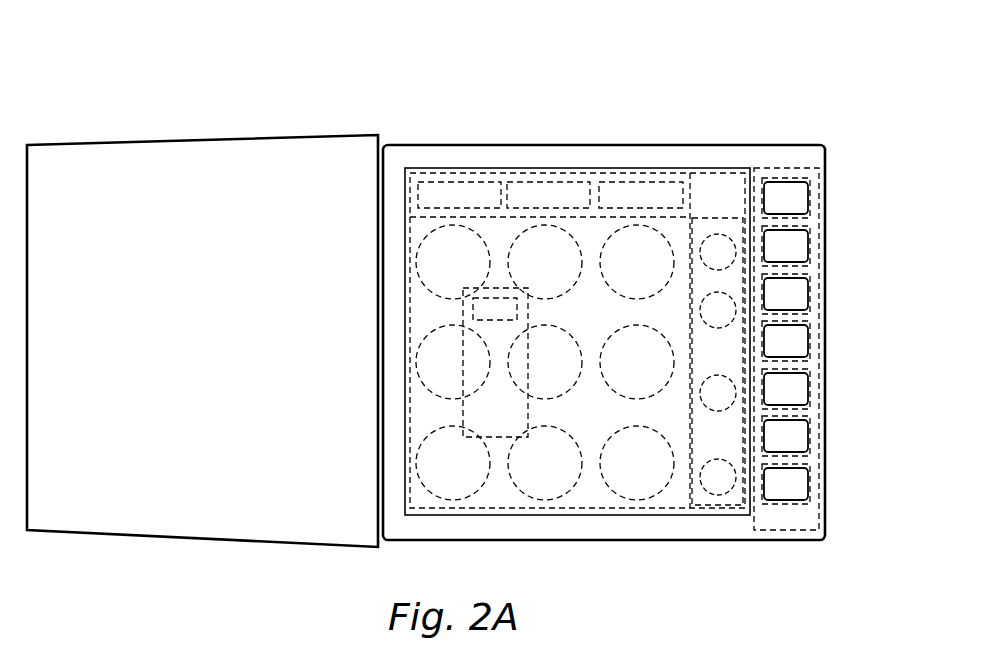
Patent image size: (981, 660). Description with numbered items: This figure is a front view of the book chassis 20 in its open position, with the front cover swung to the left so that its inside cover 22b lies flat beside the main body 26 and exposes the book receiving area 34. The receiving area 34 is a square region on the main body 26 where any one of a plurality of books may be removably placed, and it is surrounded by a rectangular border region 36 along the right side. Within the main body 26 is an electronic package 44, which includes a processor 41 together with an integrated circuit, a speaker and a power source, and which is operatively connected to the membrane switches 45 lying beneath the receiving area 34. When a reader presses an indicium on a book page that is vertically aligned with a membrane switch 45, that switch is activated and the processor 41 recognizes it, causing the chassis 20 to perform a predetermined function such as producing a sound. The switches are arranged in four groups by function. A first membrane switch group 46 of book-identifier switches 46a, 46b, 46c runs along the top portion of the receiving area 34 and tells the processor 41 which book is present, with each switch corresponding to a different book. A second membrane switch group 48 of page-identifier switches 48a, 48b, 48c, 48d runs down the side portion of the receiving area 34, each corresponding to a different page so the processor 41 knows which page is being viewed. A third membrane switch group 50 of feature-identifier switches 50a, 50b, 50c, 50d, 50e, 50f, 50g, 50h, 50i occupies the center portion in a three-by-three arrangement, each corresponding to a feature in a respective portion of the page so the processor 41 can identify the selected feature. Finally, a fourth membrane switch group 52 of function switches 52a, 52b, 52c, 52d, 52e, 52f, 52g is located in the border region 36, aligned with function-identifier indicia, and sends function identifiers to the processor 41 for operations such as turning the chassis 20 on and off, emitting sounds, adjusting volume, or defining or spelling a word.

The book chassis 20 is at (124, 98).
The inside cover 22b is at (207, 176).
The main body 26 is at (591, 92).
The receiving area 34 is at (716, 192).
The border region 36 is at (792, 148).
The processor 41 is at (490, 312).
The electronic package 44 is at (462, 420).
The membrane switches 45 is at (488, 154).
The first membrane switch group 46 is at (428, 168).
The book-identifier switch 46a is at (459, 195).
The book-identifier switch 46b is at (548, 195).
The book-identifier switch 46c is at (641, 195).
The second membrane switch group 48 is at (719, 508).
The page-identifier switch 48a is at (718, 252).
The page-identifier switch 48b is at (718, 310).
The page-identifier switch 48c is at (718, 393).
The page-identifier switch 48d is at (718, 477).
The third membrane switch group 50 is at (601, 498).
The feature-identifier switch 50a is at (453, 262).
The feature-identifier switch 50b is at (545, 262).
The feature-identifier switch 50c is at (637, 262).
The feature-identifier switch 50d is at (453, 362).
The feature-identifier switch 50e is at (545, 362).
The feature-identifier switch 50f is at (637, 362).
The feature-identifier switch 50g is at (453, 463).
The feature-identifier switch 50h is at (545, 463).
The feature-identifier switch 50i is at (637, 463).
The fourth membrane switch group 52 is at (787, 534).
The fourth membrane switch 52a is at (786, 198).
The fourth membrane switch 52b is at (786, 246).
The fourth membrane switch 52c is at (786, 294).
The fourth membrane switch 52d is at (786, 341).
The fourth membrane switch 52e is at (786, 389).
The fourth membrane switch 52f is at (786, 436).
The fourth membrane switch 52g is at (786, 484).